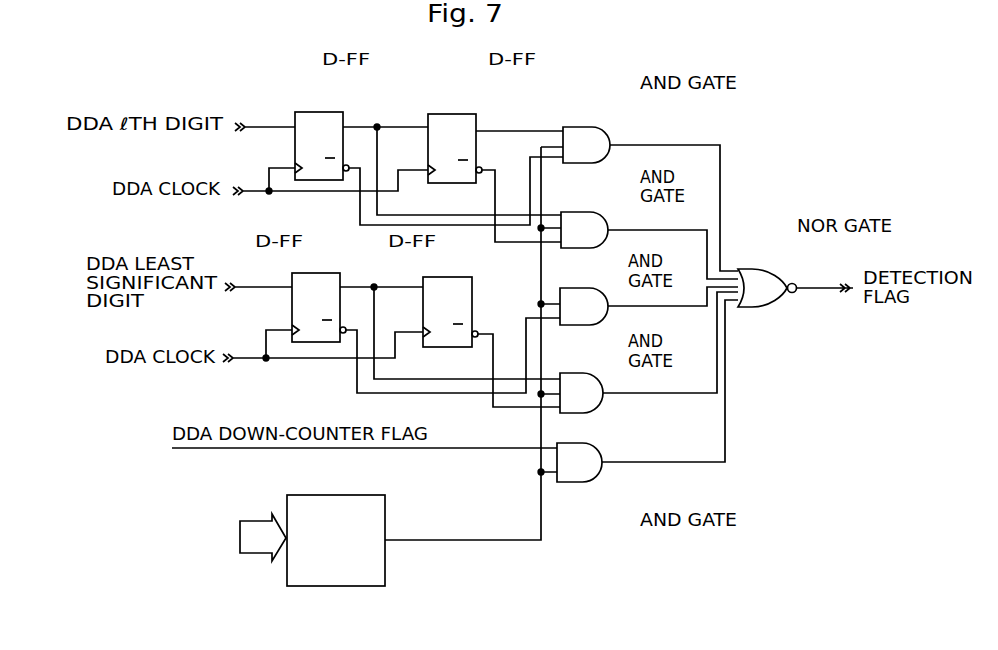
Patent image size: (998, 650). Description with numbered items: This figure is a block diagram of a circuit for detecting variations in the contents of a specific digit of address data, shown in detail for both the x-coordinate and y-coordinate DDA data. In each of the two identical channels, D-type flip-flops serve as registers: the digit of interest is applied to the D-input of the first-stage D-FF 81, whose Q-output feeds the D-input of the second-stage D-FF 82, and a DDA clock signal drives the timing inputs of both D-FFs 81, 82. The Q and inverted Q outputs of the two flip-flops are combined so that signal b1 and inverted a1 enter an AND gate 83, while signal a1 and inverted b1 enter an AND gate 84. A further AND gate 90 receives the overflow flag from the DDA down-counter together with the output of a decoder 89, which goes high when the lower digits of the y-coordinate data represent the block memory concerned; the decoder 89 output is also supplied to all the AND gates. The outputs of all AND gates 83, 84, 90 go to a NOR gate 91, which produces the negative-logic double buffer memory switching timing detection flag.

The first-stage D-FF 81 is at (322, 118).
The second-stage D-FF 82 is at (460, 118).
The AND gate 83 is at (592, 132).
The AND gate 84 is at (590, 217).
The decoder 89 is at (328, 503).
The AND gate 90 is at (582, 478).
The NOR gate 91 is at (762, 278).